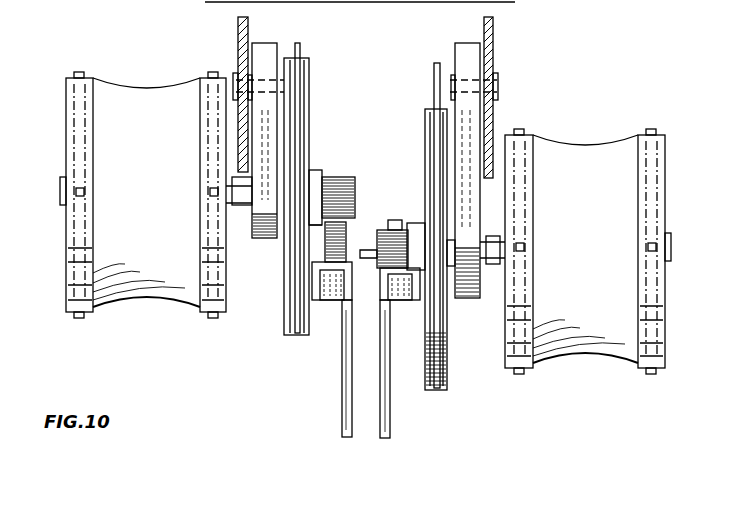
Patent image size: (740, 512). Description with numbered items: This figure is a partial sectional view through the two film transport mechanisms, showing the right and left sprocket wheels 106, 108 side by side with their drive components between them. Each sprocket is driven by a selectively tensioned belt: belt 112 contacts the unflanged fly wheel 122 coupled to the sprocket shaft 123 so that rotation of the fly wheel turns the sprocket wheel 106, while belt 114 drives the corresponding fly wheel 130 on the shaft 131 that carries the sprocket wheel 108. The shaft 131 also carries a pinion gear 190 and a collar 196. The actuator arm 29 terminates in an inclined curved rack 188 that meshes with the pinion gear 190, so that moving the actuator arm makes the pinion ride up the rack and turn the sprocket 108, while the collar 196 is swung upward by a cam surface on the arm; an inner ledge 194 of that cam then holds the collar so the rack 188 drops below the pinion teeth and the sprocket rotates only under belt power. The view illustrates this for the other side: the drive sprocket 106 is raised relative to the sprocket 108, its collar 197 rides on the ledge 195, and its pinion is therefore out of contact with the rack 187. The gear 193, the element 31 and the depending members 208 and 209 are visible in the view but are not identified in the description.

The sprocket wheel 106 is at (140, 86).
The sprocket wheel 108 is at (580, 148).
The drive belt 112 is at (299, 56).
The drive belt 114 is at (436, 66).
The unflanged fly wheel 122 is at (309, 87).
The sprocket shaft 123 is at (226, 205).
The fly wheel 130 is at (425, 128).
The shaft 131 is at (493, 264).
The rack 187 is at (346, 230).
The inclined curved rack 188 is at (390, 228).
The pinion gear 190 is at (377, 251).
The gear 193 is at (344, 177).
The inner ledge 194 is at (403, 226).
The ledge 195 is at (320, 227).
The collar 196 is at (423, 234).
The collar 197 is at (312, 170).
The actuator arm 29 is at (389, 300).
The bracket 31 is at (312, 300).
The rod 208 is at (391, 422).
The rod 209 is at (343, 420).